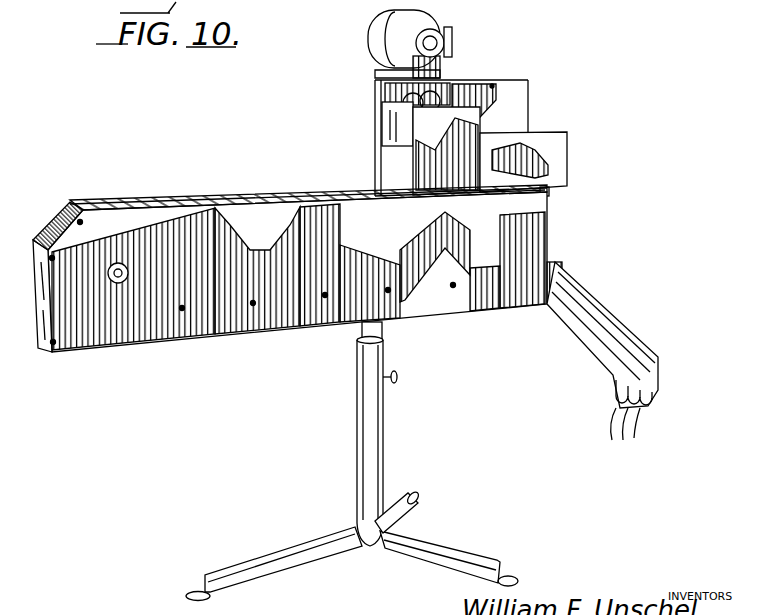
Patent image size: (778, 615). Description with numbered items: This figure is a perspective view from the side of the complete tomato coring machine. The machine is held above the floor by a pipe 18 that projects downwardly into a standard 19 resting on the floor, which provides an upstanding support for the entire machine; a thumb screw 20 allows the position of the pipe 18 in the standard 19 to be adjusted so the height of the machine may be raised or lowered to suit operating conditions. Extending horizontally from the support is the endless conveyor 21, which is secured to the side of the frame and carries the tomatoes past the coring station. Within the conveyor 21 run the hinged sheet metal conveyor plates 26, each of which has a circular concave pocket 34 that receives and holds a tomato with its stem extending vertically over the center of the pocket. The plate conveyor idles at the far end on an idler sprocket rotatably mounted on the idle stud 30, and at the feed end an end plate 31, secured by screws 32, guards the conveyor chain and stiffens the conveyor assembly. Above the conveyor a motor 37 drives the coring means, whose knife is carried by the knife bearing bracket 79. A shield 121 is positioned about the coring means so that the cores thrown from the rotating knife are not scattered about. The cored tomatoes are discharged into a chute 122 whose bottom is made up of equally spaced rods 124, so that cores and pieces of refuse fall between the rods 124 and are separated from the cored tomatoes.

The pipe 18 is at (360, 325).
The standard 19 is at (384, 460).
The thumb screw 20 is at (398, 378).
The endless conveyor 21 is at (290, 285).
The conveyor hinged plates 26 is at (222, 197).
The idle stud 30 is at (128, 273).
The end plate 31 is at (75, 217).
The screws 32 is at (55, 346).
The circular concave pocket 34 is at (284, 194).
The motor 37 is at (370, 33).
The knife bearing bracket 79 is at (437, 100).
The shield 121 is at (518, 160).
The chute 122 is at (567, 280).
The rods 124 is at (665, 452).